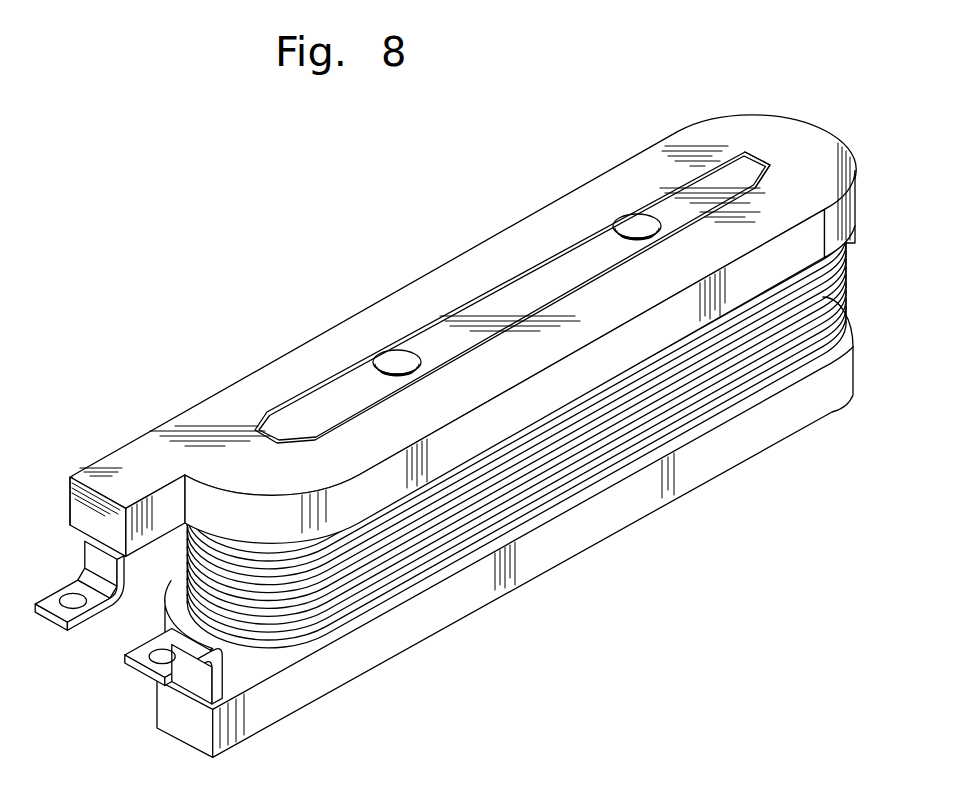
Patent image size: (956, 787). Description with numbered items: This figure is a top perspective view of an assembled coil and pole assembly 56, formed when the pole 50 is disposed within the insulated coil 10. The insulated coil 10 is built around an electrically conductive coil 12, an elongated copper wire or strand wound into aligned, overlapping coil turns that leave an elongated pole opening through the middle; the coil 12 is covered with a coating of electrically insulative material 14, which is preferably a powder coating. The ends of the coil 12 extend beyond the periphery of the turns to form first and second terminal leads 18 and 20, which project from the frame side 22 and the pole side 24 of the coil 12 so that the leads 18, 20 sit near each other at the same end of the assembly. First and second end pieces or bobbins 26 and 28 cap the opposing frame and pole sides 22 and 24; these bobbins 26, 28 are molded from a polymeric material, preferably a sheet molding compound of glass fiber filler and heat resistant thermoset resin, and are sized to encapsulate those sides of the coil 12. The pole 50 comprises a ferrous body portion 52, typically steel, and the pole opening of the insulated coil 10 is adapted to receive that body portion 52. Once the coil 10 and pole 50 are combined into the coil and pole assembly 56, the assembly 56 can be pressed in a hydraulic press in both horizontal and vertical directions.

The insulated coil 10 is at (465, 383).
The electrically conductive coil 12 is at (862, 305).
The coating of electrically insulative material 14 is at (838, 272).
The first terminal lead 18 is at (50, 602).
The second terminal lead 20 is at (120, 660).
The frame side 22 is at (381, 268).
The pole side 24 is at (590, 563).
The first end piece or bobbin 26 is at (463, 282).
The second end piece or bobbin 28 is at (537, 527).
The pole 50 is at (453, 343).
The body portion 52 is at (587, 264).
The coil and pole assembly 56 is at (686, 78).